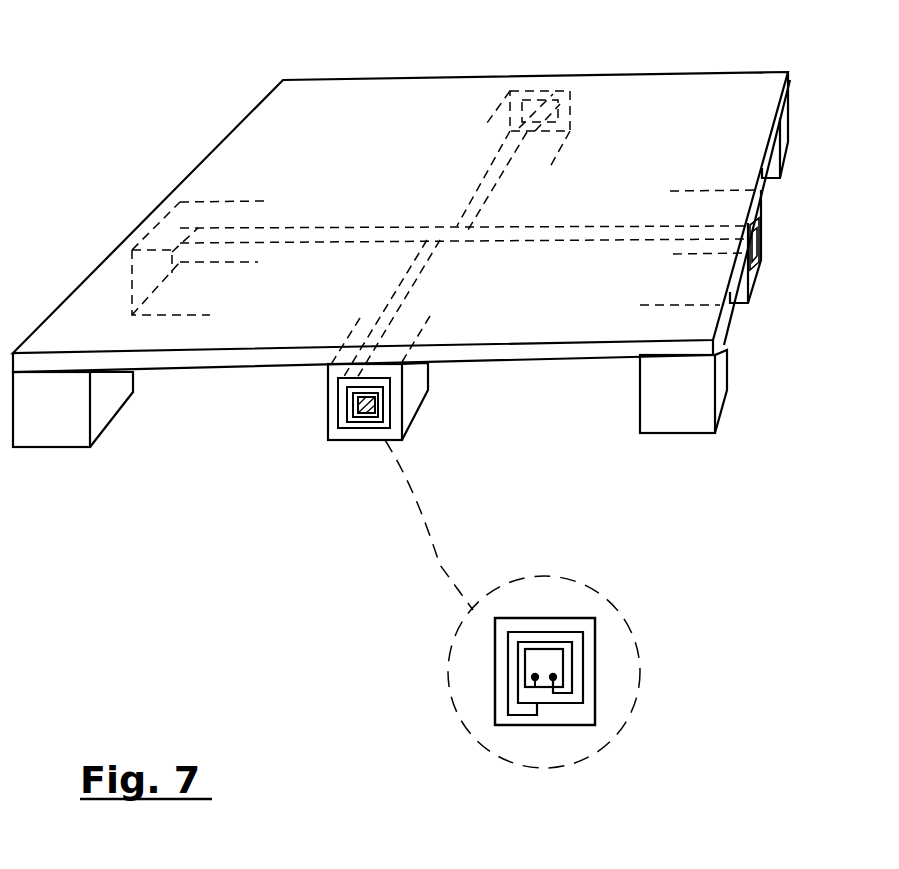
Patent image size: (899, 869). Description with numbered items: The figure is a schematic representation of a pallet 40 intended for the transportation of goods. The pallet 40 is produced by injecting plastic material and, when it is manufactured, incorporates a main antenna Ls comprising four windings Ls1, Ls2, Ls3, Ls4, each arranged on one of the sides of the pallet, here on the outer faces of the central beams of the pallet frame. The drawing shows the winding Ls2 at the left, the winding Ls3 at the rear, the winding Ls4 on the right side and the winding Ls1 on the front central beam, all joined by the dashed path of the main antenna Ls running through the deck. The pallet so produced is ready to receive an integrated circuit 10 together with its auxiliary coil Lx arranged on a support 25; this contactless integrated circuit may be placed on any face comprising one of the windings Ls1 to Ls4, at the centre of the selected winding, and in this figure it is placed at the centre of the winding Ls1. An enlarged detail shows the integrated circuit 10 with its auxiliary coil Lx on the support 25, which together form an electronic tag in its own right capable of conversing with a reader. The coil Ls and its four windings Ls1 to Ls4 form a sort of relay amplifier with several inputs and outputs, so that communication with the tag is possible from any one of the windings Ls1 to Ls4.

The pallet 40 is at (222, 546).
The main antenna Ls is at (606, 222).
The first winding Ls1 is at (355, 428).
The second winding Ls2 is at (133, 275).
The third winding Ls3 is at (556, 92).
The fourth winding Ls4 is at (761, 257).
The support 25 is at (495, 707).
The auxiliary coil Lx is at (572, 677).
The integrated circuit 10 is at (555, 660).